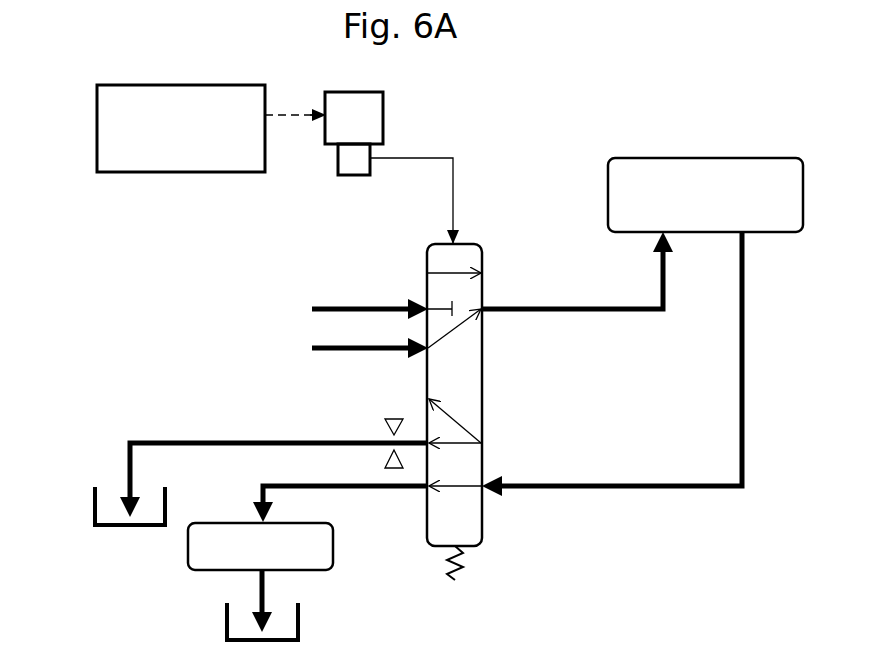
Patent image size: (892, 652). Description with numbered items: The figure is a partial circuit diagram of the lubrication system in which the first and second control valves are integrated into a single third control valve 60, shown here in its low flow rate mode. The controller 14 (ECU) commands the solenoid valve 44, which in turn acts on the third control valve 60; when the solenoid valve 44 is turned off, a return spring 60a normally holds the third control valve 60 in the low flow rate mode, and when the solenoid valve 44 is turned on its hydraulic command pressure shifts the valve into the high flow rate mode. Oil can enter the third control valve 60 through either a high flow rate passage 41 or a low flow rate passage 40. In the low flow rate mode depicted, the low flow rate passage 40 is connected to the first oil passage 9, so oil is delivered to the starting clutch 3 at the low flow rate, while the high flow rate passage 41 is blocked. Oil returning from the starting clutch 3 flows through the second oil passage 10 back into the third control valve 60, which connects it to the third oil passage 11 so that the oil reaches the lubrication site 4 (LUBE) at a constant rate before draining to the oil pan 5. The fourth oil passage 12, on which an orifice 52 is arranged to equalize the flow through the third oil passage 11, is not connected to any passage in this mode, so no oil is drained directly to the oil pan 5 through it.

The controller 14 is at (97, 130).
The solenoid valve 44 is at (383, 113).
The third control valve 60 is at (488, 217).
The return spring 60a is at (465, 560).
The high flow rate passage 41 is at (361, 302).
The low flow rate passage 40 is at (345, 353).
The first oil passage 9 is at (568, 306).
The starting clutch 3 is at (705, 157).
The second oil passage 10 is at (745, 315).
The fourth oil passage 12 is at (236, 440).
The orifice 52 is at (378, 431).
The third oil passage 11 is at (382, 490).
The lubrication site 4 is at (188, 548).
The oil pan 5 is at (95, 510).